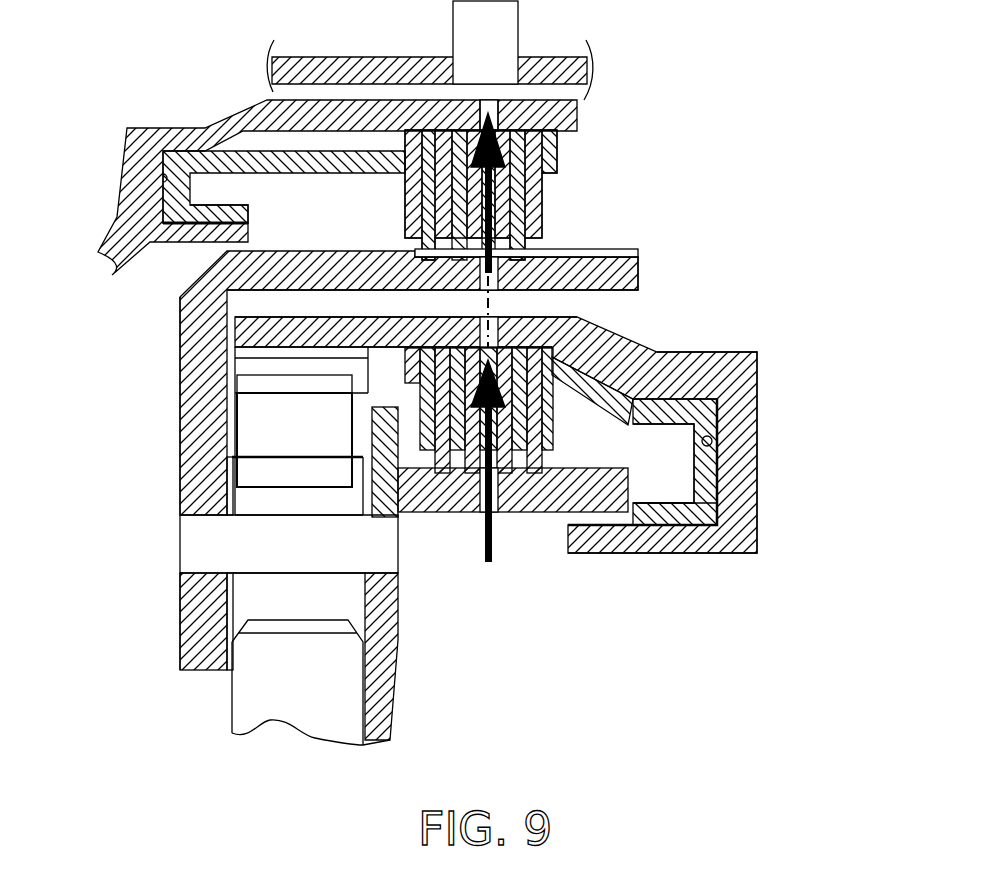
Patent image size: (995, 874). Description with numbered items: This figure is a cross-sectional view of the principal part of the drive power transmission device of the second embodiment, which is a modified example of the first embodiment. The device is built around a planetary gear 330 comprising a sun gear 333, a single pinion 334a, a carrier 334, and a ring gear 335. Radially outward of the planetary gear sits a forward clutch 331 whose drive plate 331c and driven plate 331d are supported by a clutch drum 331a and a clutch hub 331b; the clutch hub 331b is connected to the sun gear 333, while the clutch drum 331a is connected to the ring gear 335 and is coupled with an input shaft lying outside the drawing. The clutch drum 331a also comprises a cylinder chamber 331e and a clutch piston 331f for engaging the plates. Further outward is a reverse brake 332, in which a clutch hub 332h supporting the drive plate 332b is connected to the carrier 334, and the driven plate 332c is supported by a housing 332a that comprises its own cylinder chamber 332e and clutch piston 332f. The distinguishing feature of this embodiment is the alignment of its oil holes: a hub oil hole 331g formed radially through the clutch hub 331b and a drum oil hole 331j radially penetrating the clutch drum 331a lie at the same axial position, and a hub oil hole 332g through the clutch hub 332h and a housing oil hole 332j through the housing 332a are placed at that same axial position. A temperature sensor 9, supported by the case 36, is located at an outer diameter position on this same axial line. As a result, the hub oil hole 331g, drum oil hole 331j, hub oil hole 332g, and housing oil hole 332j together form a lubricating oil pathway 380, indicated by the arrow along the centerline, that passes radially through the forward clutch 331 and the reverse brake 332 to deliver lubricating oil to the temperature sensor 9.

The temperature sensor 9 is at (452, 18).
The case 36 is at (560, 62).
The planetary gear 330 is at (226, 708).
The forward clutch 331 is at (705, 375).
The clutch drum 331a is at (708, 373).
The clutch hub 331b is at (617, 486).
The drive plate 331c is at (541, 474).
The driven plate 331d is at (468, 474).
The cylinder chamber 331e is at (712, 441).
The clutch piston 331f is at (707, 488).
The hub oil hole 331g is at (493, 510).
The drum oil hole 331j is at (497, 330).
The reverse brake 332 is at (563, 172).
The housing 332a is at (330, 108).
The drive plate 332b is at (435, 214).
The driven plate 332c is at (533, 192).
The cylinder chamber 332e is at (163, 178).
The clutch piston 332f is at (178, 206).
The hub oil hole 332g is at (497, 277).
The clutch hub 332h is at (628, 270).
The housing oil hole 332j is at (490, 123).
The sun gear 333 is at (232, 678).
The carrier 334 is at (200, 468).
The single pinion 334a is at (263, 596).
The ring gear 335 is at (272, 413).
The lubricating oil pathway 380 is at (482, 552).